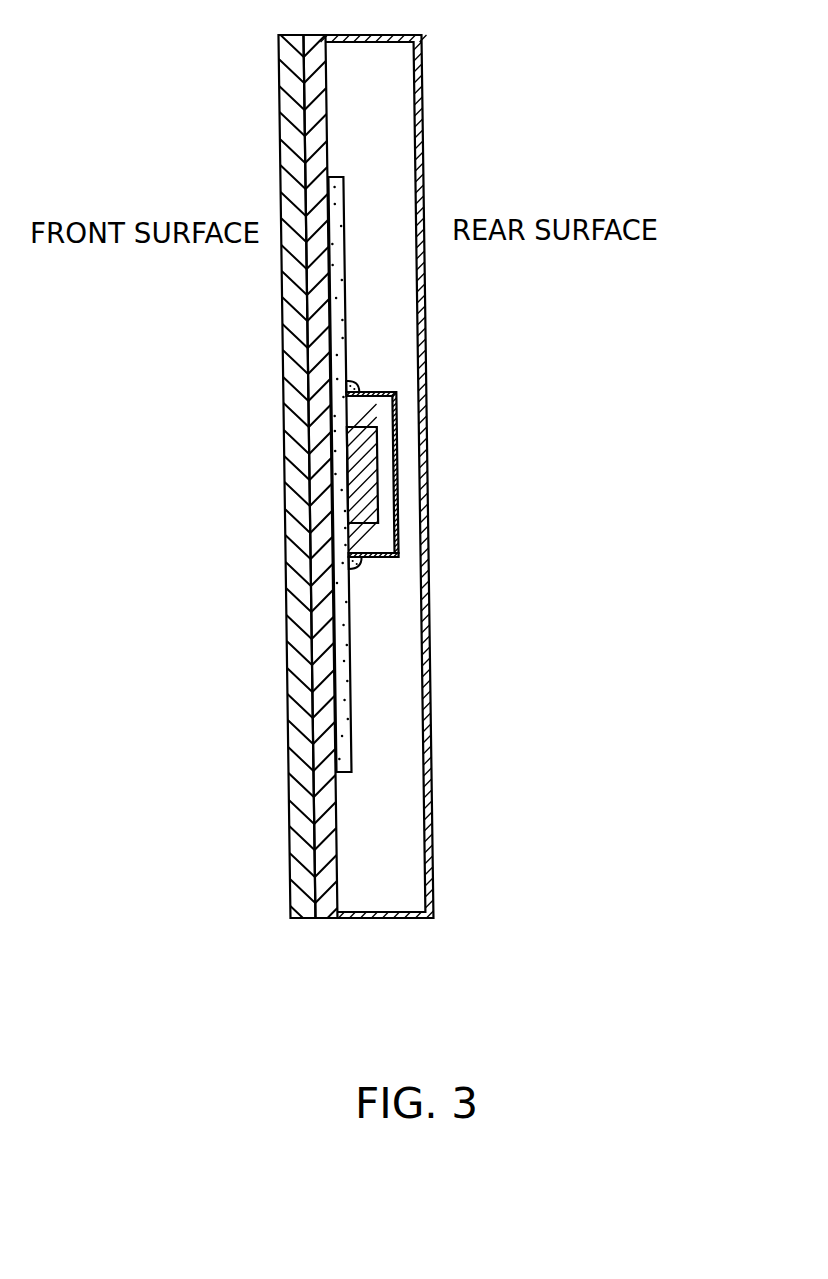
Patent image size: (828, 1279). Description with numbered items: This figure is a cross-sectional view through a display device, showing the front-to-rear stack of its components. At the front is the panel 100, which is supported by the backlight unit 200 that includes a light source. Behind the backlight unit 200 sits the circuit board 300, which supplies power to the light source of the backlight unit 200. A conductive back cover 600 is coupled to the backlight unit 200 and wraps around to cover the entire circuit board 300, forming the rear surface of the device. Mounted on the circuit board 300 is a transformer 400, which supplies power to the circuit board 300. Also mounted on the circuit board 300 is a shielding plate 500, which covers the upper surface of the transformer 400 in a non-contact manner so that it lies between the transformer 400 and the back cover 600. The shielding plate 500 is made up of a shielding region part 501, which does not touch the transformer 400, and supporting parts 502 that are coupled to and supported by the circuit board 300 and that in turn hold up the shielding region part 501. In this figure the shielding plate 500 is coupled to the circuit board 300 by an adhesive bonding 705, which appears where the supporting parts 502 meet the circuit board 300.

The panel 100 is at (302, 905).
The backlight unit 200 is at (328, 905).
The circuit board 300 is at (347, 738).
The transformer 400 is at (355, 468).
The shielding plate 500 is at (471, 528).
The shielding region part 501 is at (398, 558).
The supporting parts 502 is at (380, 560).
The conductive back cover 600 is at (428, 478).
The adhesive bonding 705 is at (358, 387).